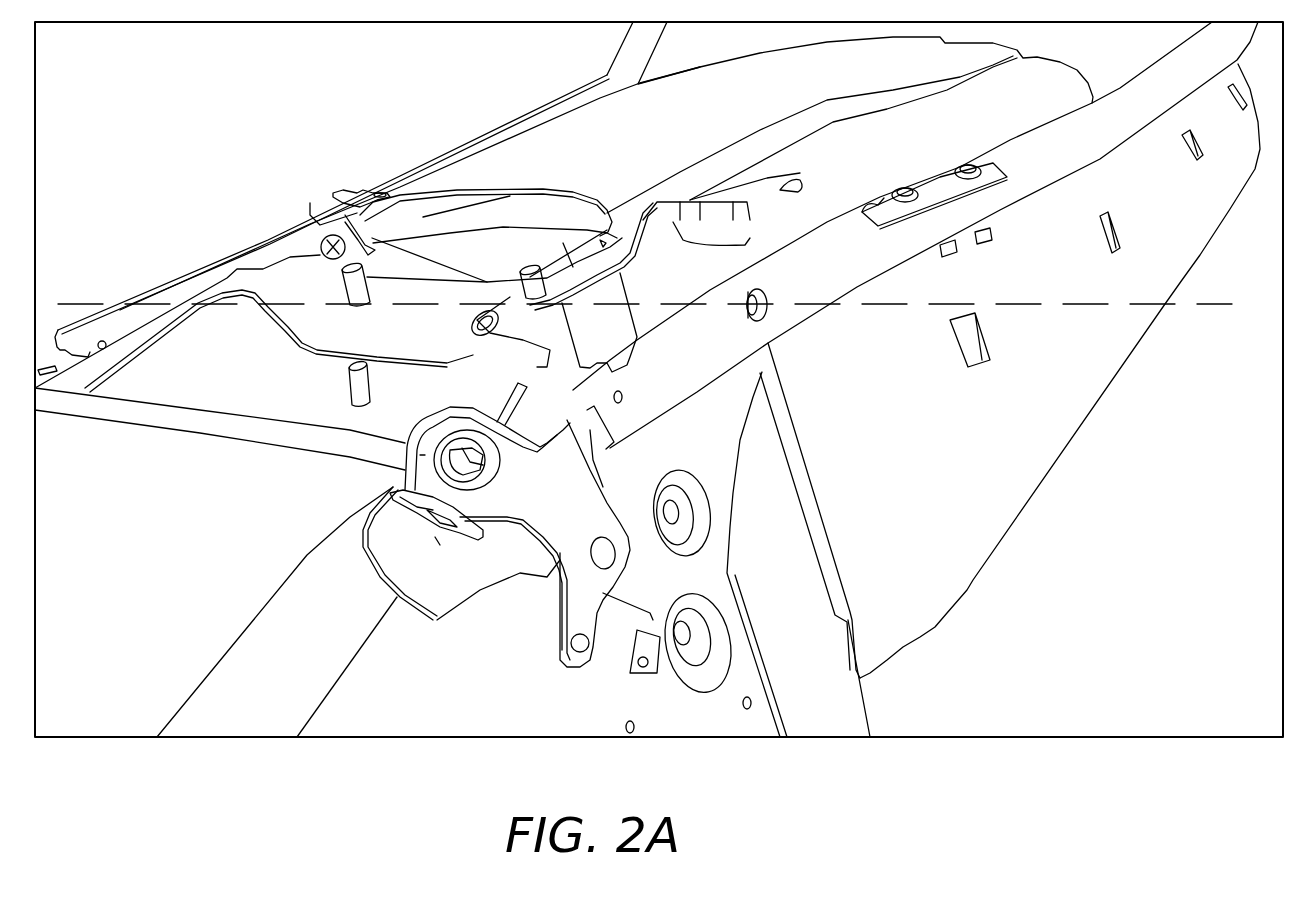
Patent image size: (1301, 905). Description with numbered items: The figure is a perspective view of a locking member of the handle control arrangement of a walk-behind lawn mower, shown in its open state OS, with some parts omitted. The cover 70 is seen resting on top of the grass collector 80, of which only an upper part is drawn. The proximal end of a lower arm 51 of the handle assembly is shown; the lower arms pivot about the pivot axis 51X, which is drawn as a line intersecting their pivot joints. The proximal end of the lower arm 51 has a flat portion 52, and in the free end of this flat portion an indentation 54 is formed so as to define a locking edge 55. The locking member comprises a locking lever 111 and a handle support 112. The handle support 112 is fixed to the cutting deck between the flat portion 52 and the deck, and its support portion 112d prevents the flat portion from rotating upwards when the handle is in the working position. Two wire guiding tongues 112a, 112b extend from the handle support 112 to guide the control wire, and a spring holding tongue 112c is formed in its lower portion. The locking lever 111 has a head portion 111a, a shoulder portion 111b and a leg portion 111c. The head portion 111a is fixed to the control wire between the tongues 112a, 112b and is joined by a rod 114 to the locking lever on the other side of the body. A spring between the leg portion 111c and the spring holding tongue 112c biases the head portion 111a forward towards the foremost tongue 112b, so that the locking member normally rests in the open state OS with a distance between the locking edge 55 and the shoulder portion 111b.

The cover 70 is at (762, 93).
The lower arm 51 is at (1050, 186).
The locking edge 55 is at (930, 189).
The grass collector 80 is at (930, 467).
The flat portion 52 is at (113, 327).
The pivot axis 51X is at (668, 298).
The rod 114 is at (153, 411).
The support portion 112d is at (583, 323).
The wire guiding tongue 112a is at (493, 350).
The handle support 112 is at (660, 475).
The locking lever 111 is at (557, 510).
The indentation 54 is at (607, 469).
The head portion 111a is at (423, 450).
The shoulder portion 111b is at (523, 412).
The leg portion 111c is at (575, 620).
The wire guiding tongue 112b is at (378, 520).
The spring holding tongue 112c is at (663, 678).
The open state OS is at (380, 386).